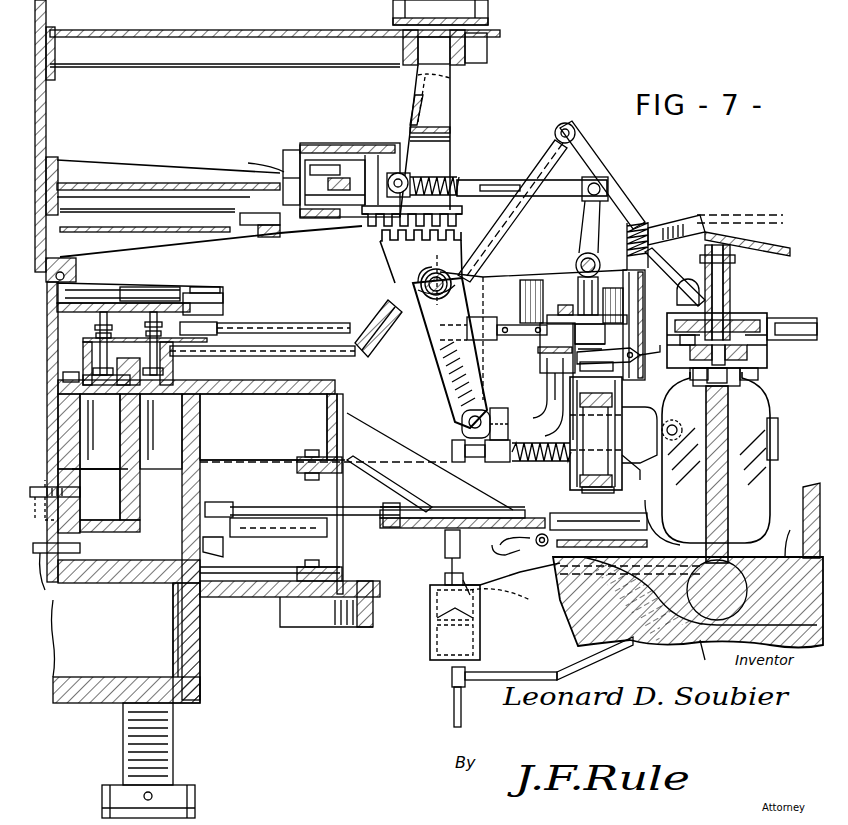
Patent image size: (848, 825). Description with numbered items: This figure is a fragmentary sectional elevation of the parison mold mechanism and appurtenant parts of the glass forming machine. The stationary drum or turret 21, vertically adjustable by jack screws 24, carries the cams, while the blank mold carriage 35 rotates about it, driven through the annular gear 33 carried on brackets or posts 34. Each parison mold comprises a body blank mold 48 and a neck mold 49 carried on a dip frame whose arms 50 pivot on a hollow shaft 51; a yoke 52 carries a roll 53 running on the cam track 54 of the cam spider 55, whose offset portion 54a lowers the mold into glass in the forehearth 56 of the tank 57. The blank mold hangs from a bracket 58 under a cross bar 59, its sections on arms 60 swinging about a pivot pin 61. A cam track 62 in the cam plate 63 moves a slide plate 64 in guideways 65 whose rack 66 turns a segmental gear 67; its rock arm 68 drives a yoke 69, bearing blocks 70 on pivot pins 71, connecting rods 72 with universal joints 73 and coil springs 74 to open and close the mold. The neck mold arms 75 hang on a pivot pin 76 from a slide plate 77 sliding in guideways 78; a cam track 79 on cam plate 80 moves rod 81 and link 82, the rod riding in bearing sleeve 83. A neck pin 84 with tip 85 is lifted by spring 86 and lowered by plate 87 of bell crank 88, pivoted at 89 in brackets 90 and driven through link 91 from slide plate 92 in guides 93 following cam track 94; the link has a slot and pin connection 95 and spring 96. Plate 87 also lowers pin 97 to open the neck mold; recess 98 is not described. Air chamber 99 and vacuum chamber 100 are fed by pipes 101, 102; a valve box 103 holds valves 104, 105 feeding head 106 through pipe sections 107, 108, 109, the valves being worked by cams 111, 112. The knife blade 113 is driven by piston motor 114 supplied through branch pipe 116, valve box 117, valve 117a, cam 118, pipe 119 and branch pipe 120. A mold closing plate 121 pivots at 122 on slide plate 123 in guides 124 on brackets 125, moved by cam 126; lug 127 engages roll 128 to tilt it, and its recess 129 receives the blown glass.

The stationary drum or turret 21 is at (46, 104).
The jack screws 24 is at (175, 748).
The annular gear 33 is at (365, 628).
The brackets or posts 34 is at (340, 552).
The blank mold carriage 35 is at (332, 392).
The body blank mold 48 is at (778, 413).
The neck mold 49 is at (770, 358).
The arms 50 is at (515, 282).
The hollow shaft 51 is at (421, 277).
The yoke 52 is at (452, 135).
The roll 53 is at (458, 60).
The cam track 54 is at (404, 60).
The offset portion 54a is at (488, 50).
The cam spider 55 is at (255, 35).
The forehearth 56 is at (565, 610).
The tank 57 is at (808, 488).
The bracket 58 is at (548, 388).
The cross bar 59 is at (540, 355).
The blank mold arms 60 is at (630, 407).
The vertical pivot pin 61 is at (592, 493).
The cam track 62 is at (250, 200).
The cam plate or spider 63 is at (162, 185).
The slide plate 64 is at (265, 233).
The guideways 65 is at (245, 238).
The rack 66 is at (398, 197).
The segmental gear 67 is at (424, 249).
The rock arm 68 is at (452, 400).
The yoke 69 is at (508, 424).
The bearing blocks 70 is at (490, 462).
The vertical pivot pins 71 is at (492, 412).
The connecting rods 72 is at (458, 462).
The universal joint connections 73 is at (655, 465).
The coil springs 74 is at (538, 462).
The arms 75 is at (645, 357).
The pivot pin 76 is at (612, 371).
The slide plate 77 is at (578, 305).
The guideways 78 is at (805, 320).
The cam track 79 is at (226, 300).
The cam plate 80 is at (122, 285).
The rod 81 is at (270, 322).
The link 82 is at (515, 324).
The bearing sleeve 83 is at (396, 345).
The neck pin or plunger 84 is at (730, 285).
The tip 85 is at (706, 400).
The coil spring 86 is at (735, 262).
The plate 87 is at (790, 245).
The bell crank lever 88 is at (690, 225).
The pivot 89 is at (580, 257).
The bearing brackets 90 is at (625, 300).
The link 91 is at (535, 196).
The slide plate 92 is at (370, 145).
The guides 93 is at (297, 150).
The cam track 94 is at (258, 165).
The slot and pin connection 95 is at (575, 190).
The coil spring 96 is at (452, 160).
The pin 97 is at (640, 228).
The mold cavity 98 is at (790, 530).
The air chamber 99 is at (126, 548).
The vacuum chamber 100 is at (100, 494).
The air pipe 101 is at (45, 590).
The vacuum pipe 102 is at (50, 500).
The valve box 103 is at (148, 322).
The valve 104 is at (100, 431).
The valve 105 is at (161, 431).
The head 106 is at (748, 316).
The pipe section 107 is at (280, 364).
The pipe section 108 is at (548, 150).
The pipe section 109 is at (595, 160).
The cam 111 is at (97, 320).
The cam 112 is at (165, 290).
The knife blade 113 is at (746, 556).
The piston motor 114 is at (700, 648).
The branch pipe 116 is at (454, 710).
The valve box 117 is at (481, 643).
The valve 117a is at (440, 625).
The cam 118 is at (445, 540).
The pipe 119 is at (478, 598).
The branch pipe 120 is at (510, 675).
The mold closing plate 121 is at (520, 574).
The pivotal connection 122 is at (540, 547).
The slide plate 123 is at (540, 515).
The guides 124 is at (598, 516).
The brackets 125 is at (395, 445).
The stationary cam 126 is at (225, 550).
The cam lug 127 is at (552, 588).
The roll 128 is at (500, 553).
The recess 129 is at (650, 530).